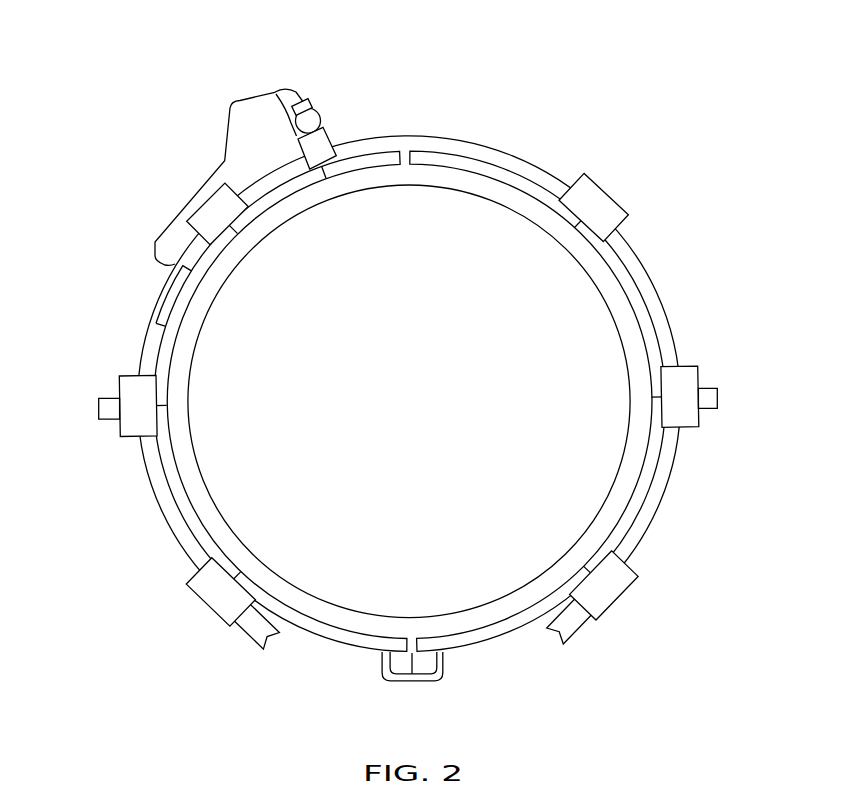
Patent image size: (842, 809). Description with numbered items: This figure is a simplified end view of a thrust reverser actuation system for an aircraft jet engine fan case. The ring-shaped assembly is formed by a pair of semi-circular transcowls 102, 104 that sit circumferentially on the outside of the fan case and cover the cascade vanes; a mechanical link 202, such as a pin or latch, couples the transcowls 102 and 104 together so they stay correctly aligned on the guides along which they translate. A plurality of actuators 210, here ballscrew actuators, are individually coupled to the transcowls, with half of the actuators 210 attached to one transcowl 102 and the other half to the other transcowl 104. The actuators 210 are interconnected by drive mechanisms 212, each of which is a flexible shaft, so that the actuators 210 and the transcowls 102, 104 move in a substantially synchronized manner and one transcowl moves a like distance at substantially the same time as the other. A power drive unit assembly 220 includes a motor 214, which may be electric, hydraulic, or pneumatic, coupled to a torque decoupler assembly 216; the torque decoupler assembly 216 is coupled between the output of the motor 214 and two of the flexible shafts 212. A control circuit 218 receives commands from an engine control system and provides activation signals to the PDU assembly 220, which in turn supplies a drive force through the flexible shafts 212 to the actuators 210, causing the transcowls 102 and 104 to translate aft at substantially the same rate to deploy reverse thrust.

The transcowl 102 is at (636, 467).
The transcowl 104 is at (171, 476).
The mechanical link 202 is at (417, 674).
The actuator 210 is at (195, 198).
The drive mechanism 212 is at (473, 135).
The motor 214 is at (312, 110).
The torque decoupler assembly 216 is at (316, 154).
The control circuit 218 is at (145, 293).
The power drive unit assembly 220 is at (249, 177).